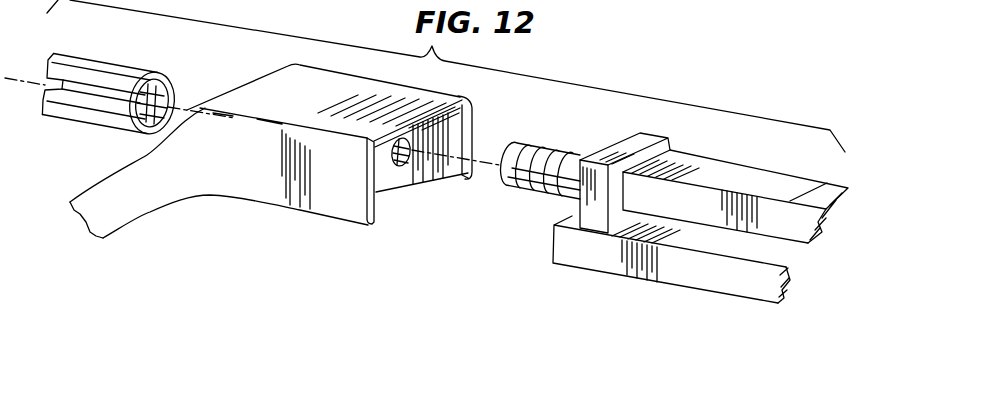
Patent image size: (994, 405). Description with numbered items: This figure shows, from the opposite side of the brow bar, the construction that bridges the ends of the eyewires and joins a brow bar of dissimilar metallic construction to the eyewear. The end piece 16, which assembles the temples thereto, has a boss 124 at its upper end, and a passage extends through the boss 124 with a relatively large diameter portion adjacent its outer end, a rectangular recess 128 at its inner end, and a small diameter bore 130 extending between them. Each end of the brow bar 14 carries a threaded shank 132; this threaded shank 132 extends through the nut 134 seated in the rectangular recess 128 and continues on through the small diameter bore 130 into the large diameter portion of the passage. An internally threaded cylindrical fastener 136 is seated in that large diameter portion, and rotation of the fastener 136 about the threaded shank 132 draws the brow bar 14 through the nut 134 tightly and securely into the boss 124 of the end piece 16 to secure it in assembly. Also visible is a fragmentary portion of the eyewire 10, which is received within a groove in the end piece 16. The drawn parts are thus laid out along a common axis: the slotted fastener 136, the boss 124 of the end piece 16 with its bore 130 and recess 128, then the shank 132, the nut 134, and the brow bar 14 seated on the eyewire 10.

The eyewire 10 is at (688, 282).
The brow bar 14 is at (770, 183).
The end piece 16 is at (152, 215).
The boss 124 is at (275, 82).
The rectangular recess 128 is at (455, 120).
The small diameter bore 130 is at (403, 163).
The threaded shank 132 is at (550, 160).
The nut 134 is at (646, 146).
The internally threaded cylindrical fastener 136 is at (130, 72).